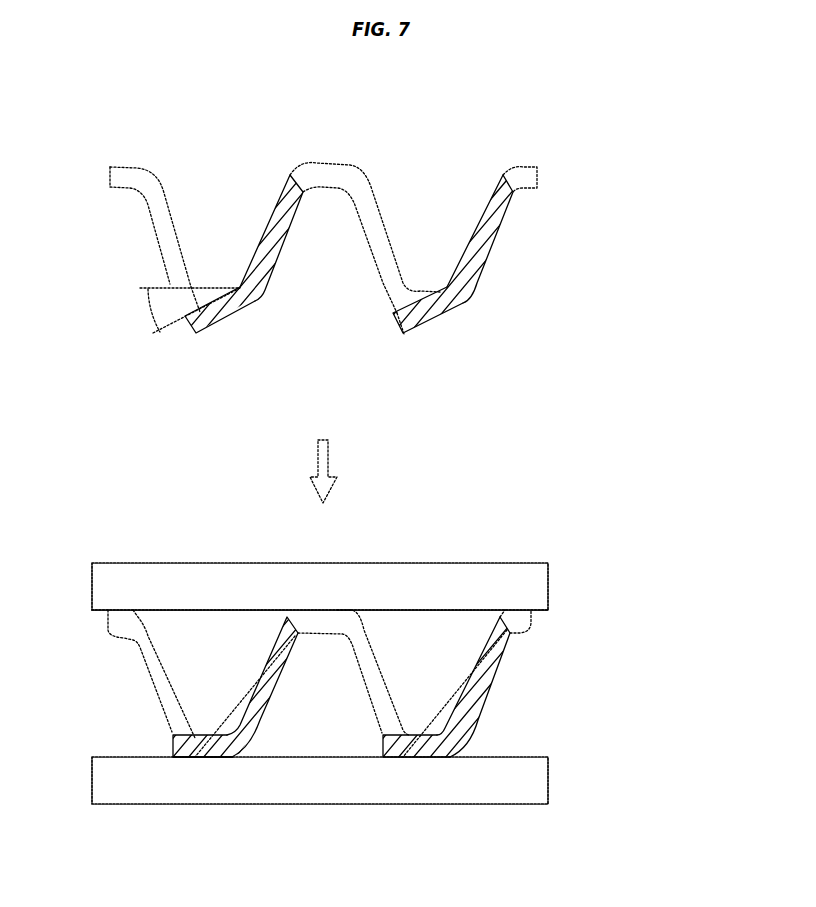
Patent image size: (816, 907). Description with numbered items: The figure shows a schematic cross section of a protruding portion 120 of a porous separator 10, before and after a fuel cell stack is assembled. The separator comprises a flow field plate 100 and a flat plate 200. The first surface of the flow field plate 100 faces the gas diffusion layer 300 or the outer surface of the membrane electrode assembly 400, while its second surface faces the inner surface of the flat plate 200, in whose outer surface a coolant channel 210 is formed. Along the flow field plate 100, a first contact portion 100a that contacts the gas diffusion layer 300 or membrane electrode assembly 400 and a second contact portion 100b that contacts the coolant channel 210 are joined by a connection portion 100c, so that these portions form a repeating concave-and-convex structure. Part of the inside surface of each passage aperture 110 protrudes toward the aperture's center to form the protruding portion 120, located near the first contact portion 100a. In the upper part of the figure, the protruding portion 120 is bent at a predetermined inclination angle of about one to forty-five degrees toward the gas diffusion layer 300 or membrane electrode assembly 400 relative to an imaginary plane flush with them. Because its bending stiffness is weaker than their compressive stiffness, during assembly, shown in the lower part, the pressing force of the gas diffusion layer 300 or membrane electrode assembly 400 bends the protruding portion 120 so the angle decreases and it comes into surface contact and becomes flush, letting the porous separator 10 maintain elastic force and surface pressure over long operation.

The porous separator 10 is at (670, 582).
The flow field plate 100 is at (359, 482).
The first contact portion 100a is at (222, 757).
The second contact portion 100b is at (318, 622).
The connection portion 100c is at (277, 667).
The passage aperture 110 is at (178, 268).
The protruding portion 120 is at (197, 334).
The flat plate 200 is at (376, 565).
The coolant channel 210 is at (465, 543).
The gas diffusion layer 300 is at (297, 830).
The membrane electrode assembly 400 is at (123, 788).